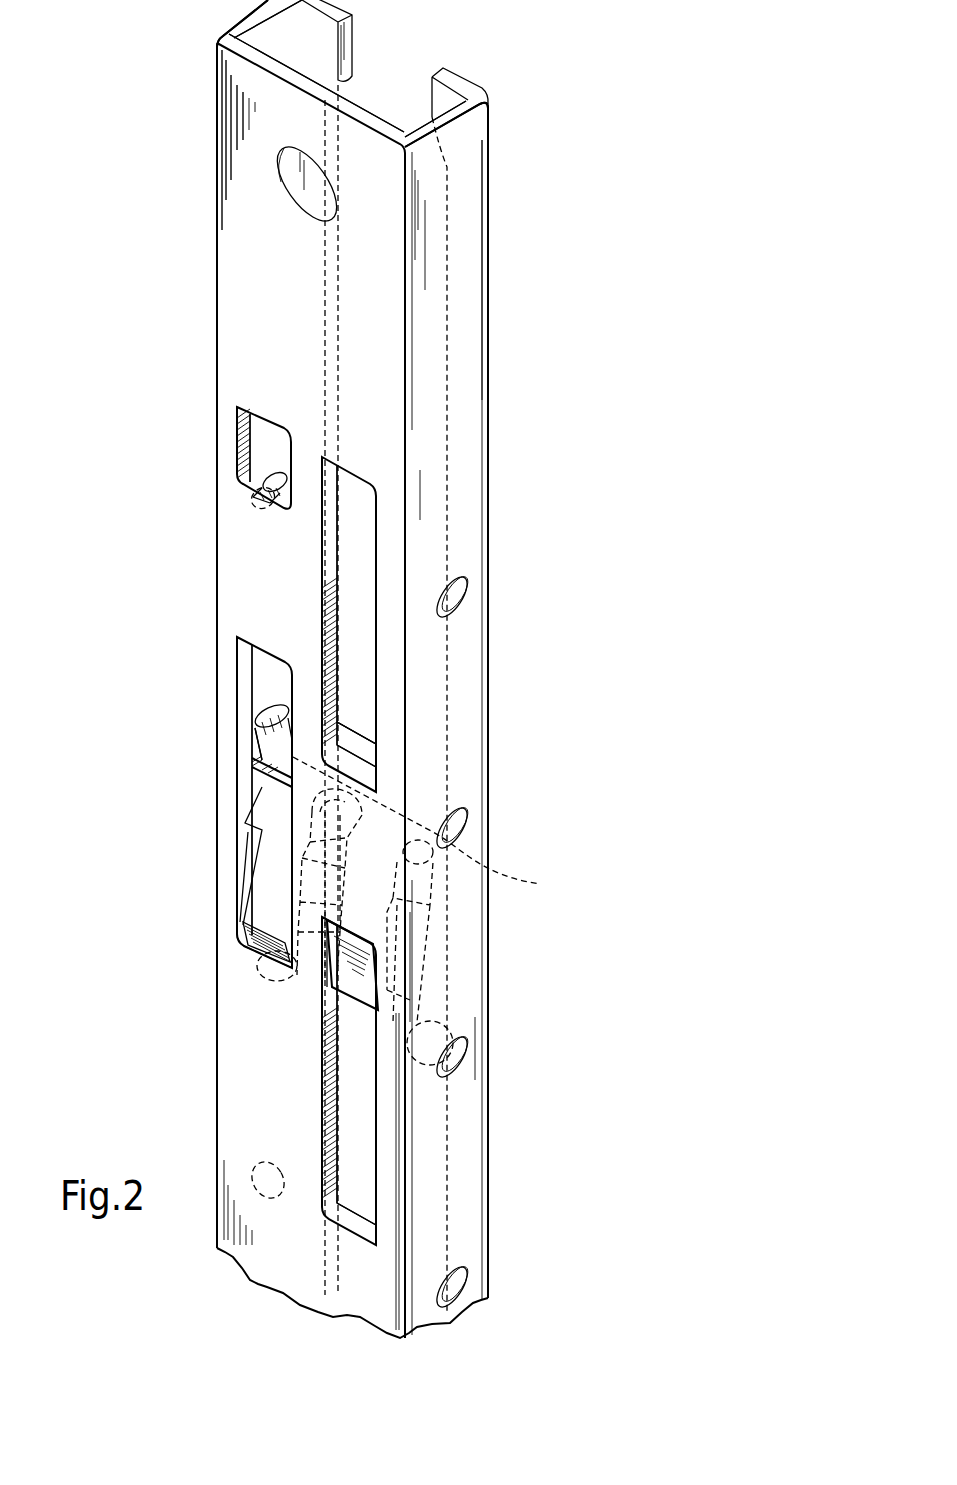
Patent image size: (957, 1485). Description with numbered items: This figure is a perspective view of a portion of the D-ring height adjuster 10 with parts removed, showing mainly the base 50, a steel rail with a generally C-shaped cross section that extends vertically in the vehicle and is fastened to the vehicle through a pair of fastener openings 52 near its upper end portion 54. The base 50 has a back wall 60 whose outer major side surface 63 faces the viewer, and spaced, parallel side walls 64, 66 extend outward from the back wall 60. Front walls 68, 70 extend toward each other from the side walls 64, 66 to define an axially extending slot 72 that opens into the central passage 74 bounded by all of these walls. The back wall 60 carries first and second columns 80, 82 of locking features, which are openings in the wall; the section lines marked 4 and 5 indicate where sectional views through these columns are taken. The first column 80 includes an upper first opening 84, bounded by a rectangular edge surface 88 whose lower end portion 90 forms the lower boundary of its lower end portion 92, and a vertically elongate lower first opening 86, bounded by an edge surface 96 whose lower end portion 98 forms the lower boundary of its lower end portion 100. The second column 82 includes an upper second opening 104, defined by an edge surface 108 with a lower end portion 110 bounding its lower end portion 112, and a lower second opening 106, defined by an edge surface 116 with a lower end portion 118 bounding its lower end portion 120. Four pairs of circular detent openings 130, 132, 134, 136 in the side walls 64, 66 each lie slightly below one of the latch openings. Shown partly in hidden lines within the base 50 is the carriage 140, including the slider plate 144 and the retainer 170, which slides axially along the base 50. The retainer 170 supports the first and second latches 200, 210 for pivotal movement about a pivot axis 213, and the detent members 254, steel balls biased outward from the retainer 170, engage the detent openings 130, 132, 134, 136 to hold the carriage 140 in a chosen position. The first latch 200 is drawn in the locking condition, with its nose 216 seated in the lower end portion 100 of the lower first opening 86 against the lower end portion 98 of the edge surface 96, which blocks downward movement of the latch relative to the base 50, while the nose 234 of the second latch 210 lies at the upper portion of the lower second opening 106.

The D-ring height adjuster 10 is at (578, 414).
The base 50 is at (492, 352).
The fastener openings 52 is at (337, 213).
The upper end portion 54 is at (217, 143).
The back wall 60 is at (263, 251).
The outer major side surface 63 is at (250, 182).
The side wall 64 is at (247, 13).
The side wall 66 is at (453, 157).
The front wall 68 is at (353, 43).
The front wall 70 is at (455, 80).
The slot 72 is at (393, 65).
The central passage 74 is at (488, 115).
The first column of locking features 80 is at (263, 360).
The second column of locking features 82 is at (348, 410).
The section line 4- 4 is at (263, 405).
The section line 5- 5 is at (348, 457).
The upper first opening 84 is at (233, 451).
The lower first opening 86 is at (232, 660).
The edge surface 88 is at (240, 428).
The lower end portion 90 is at (257, 500).
The lower end portion 92 is at (270, 483).
The edge surface 96 is at (243, 678).
The lower end portion 98 is at (258, 992).
The lower end portion 100 is at (245, 903).
The upper second opening 104 is at (380, 558).
The lower second opening 106 is at (380, 1122).
The edge surface 108 is at (330, 583).
The lower end portion 110 is at (355, 770).
The lower end portion 112 is at (360, 707).
The edge surface 116 is at (333, 1143).
The lower end portion 118 is at (357, 1230).
The lower end portion 120 is at (360, 1190).
The detent openings 130 is at (277, 470).
The detent openings 132 is at (262, 705).
The detent openings 134 is at (272, 978).
The detent openings 136 is at (267, 1170).
The carriage 140 is at (353, 693).
The slider plate 144 is at (262, 737).
The retainer 170 is at (265, 762).
The first latch 200 is at (262, 850).
The second latch 210 is at (322, 990).
The pivot axis 213 is at (434, 889).
The nose 216 is at (263, 967).
The nose 234 is at (360, 984).
The detent members 254 is at (263, 992).